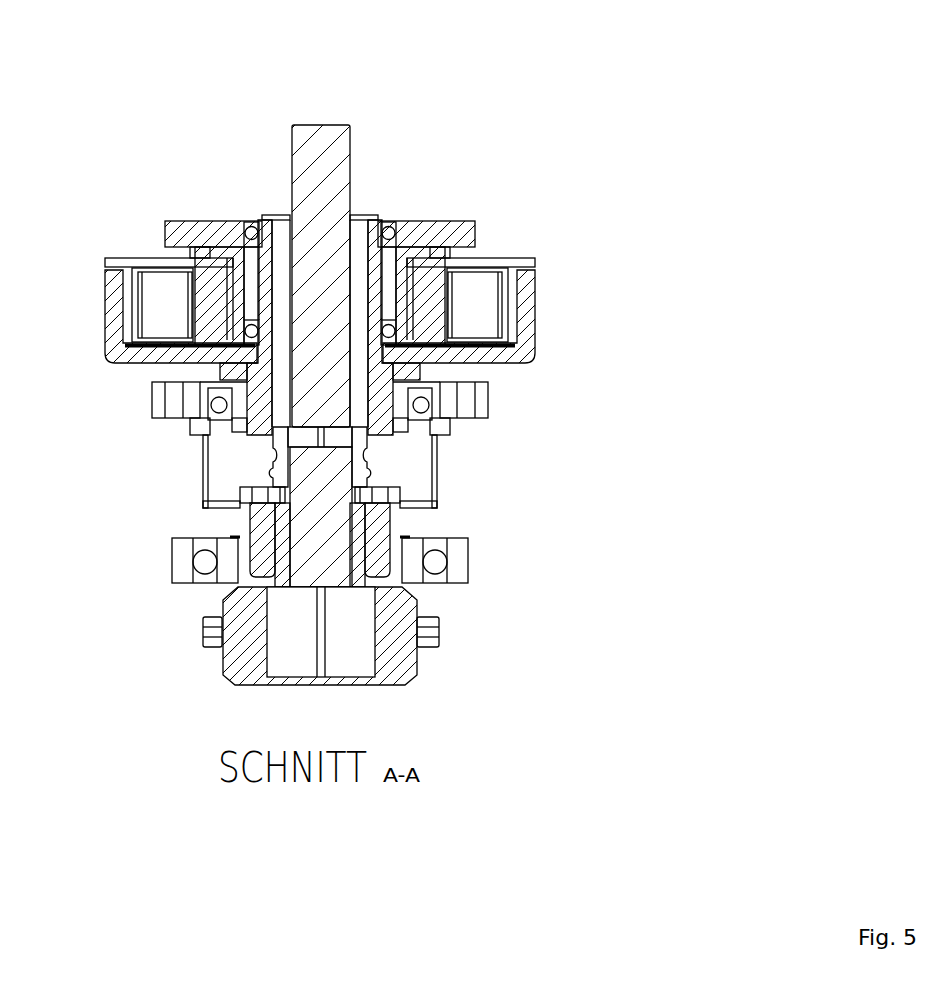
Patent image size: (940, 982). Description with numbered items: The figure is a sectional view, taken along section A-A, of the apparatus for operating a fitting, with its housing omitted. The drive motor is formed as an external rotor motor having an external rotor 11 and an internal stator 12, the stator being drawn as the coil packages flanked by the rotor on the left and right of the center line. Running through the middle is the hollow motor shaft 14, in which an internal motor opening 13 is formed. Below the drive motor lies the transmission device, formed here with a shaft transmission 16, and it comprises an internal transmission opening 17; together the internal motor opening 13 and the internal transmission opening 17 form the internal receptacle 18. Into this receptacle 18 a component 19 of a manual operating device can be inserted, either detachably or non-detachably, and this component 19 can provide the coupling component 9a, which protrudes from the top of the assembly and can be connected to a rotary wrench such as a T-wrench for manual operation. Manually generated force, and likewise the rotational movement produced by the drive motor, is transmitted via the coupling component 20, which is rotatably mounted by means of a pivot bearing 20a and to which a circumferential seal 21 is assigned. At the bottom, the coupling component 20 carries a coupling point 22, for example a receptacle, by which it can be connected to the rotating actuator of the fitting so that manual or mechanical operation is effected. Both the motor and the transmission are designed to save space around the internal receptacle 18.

The coupling component 9a is at (330, 128).
The external rotor 11 is at (518, 296).
The internal stator 12 is at (246, 318).
The internal motor opening 13 is at (358, 267).
The hollow motor shaft 14 is at (252, 244).
The shaft transmission 16 is at (440, 402).
The internal transmission opening 17 is at (206, 403).
The receptacle 18 is at (286, 228).
The component 19 is at (346, 171).
The coupling component 20 is at (347, 520).
The pivot bearing 20a is at (445, 572).
The circumferential seal 21 is at (206, 627).
The coupling point 22 is at (360, 665).